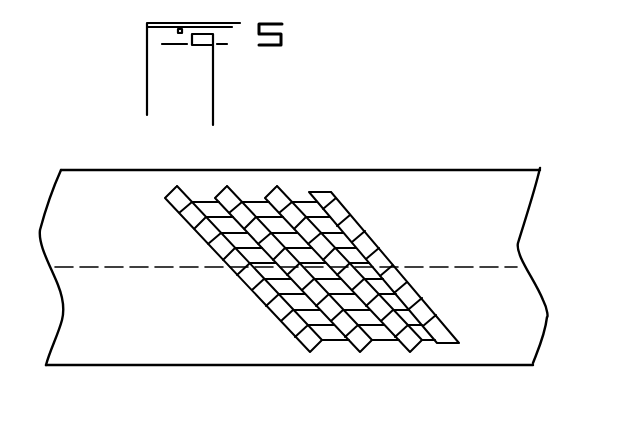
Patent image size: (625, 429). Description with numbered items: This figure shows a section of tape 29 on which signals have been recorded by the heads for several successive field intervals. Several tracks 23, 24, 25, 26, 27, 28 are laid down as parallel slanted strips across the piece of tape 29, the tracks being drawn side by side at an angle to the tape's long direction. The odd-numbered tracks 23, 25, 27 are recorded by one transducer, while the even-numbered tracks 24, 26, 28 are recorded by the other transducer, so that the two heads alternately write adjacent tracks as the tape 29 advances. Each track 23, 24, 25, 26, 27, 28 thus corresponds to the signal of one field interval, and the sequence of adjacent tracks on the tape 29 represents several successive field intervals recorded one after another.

The track 23 is at (286, 244).
The track 24 is at (186, 190).
The track 25 is at (218, 190).
The track 26 is at (250, 188).
The track 27 is at (270, 188).
The track 28 is at (298, 192).
The tape 29 is at (513, 367).